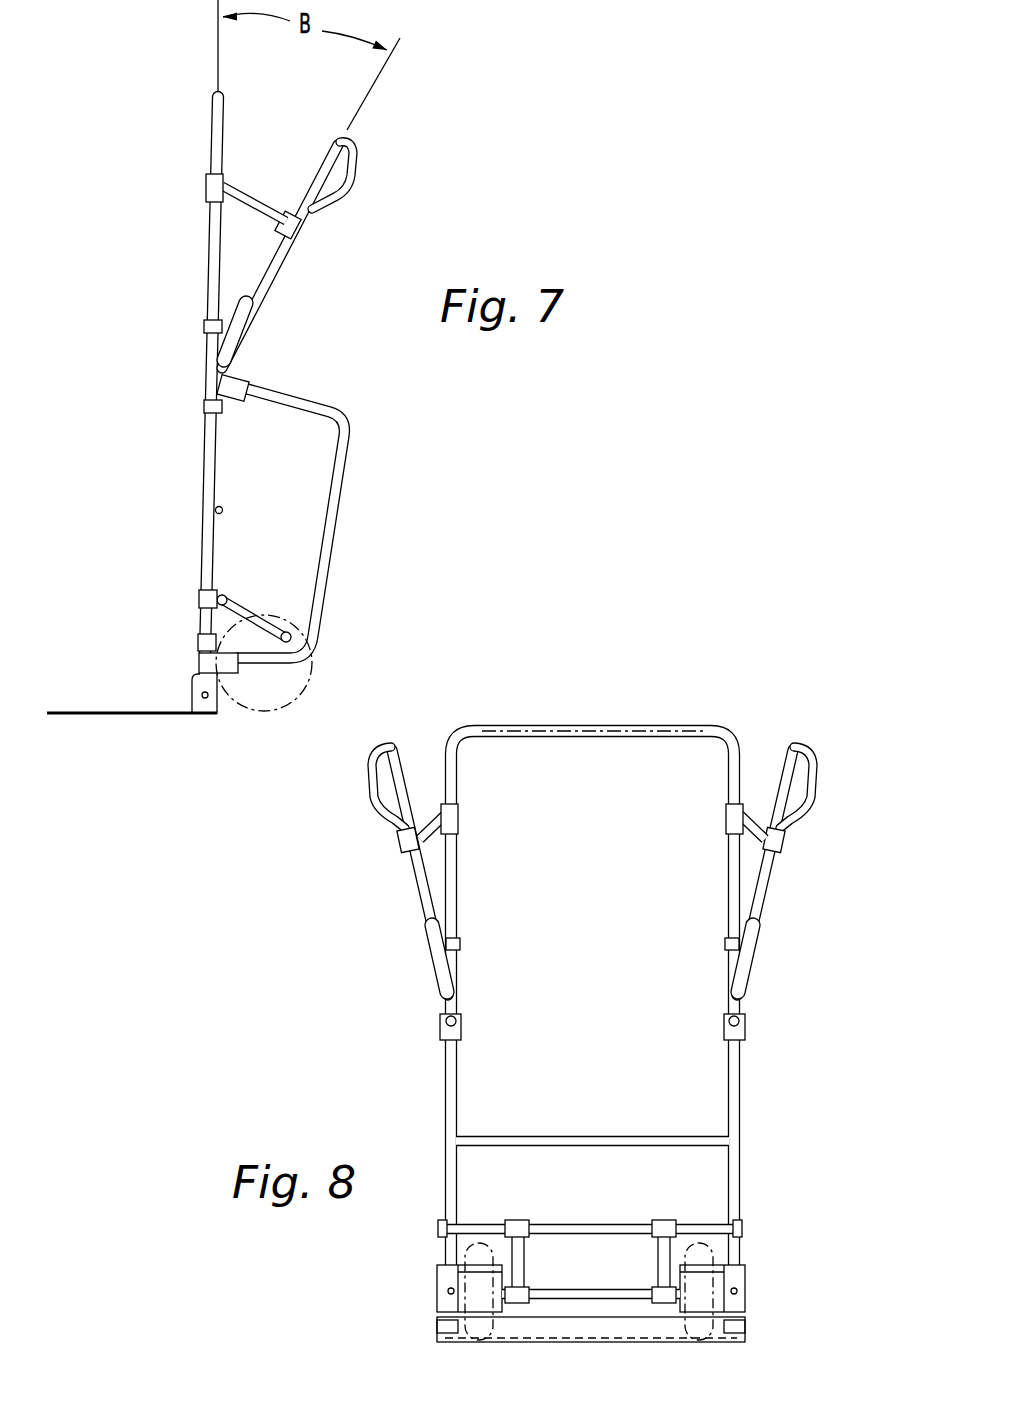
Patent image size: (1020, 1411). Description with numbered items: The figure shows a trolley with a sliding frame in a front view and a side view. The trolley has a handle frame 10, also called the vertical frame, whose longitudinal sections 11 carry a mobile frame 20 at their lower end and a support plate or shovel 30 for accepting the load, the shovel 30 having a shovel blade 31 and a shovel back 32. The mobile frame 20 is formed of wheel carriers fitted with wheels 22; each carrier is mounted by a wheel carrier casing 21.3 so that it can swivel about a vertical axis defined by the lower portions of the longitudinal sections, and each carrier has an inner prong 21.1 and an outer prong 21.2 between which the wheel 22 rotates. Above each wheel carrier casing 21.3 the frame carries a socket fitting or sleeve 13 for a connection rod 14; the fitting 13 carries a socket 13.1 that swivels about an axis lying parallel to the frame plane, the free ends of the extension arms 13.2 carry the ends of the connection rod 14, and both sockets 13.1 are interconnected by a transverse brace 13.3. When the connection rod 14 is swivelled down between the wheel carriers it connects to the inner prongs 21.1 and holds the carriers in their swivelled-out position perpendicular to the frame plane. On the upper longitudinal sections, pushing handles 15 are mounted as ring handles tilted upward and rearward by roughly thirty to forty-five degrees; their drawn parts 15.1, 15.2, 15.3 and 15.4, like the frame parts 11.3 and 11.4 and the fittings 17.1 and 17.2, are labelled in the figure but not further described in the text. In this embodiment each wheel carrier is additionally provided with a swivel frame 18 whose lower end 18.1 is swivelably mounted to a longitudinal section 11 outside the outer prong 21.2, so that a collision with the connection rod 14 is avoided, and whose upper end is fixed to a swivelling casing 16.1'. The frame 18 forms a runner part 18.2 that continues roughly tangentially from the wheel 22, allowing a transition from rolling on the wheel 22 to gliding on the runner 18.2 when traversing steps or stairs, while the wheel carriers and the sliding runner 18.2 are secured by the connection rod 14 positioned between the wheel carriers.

In FIG. 7, the handle frame 10 is at (208, 258).
In FIG. 7, the longitudinal section 11 is at (225, 121).
In FIG. 8, the longitudinal section 11 is at (457, 878).
In FIG. 8, the cross bar 11.3 is at (642, 1140).
In FIG. 7, the upper cross member 11.4 is at (214, 93).
In FIG. 8, the upper cross member 11.4 is at (585, 727).
In FIG. 7, the socket fitting 13 is at (199, 597).
In FIG. 8, the socket 13.1 is at (440, 1229).
In FIG. 7, the extension arm 13.2 is at (263, 609).
In FIG. 8, the extension arm 13.2 is at (502, 1235).
In FIG. 8, the transverse brace 13.3 is at (550, 1224).
In FIG. 7, the connection rod 14 is at (300, 650).
In FIG. 8, the connection rod 14 is at (585, 1290).
In FIG. 7, the pushing handle 15 is at (318, 233).
In FIG. 8, the pushing handle 15 is at (586, 823).
In FIG. 7, the grip 15.1 is at (333, 150).
In FIG. 8, the grip 15.1 is at (390, 785).
In FIG. 7, the collar 15.2 is at (352, 172).
In FIG. 8, the collar 15.2 is at (384, 815).
In FIG. 7, the strut 15.3 is at (255, 200).
In FIG. 8, the strut 15.3 is at (425, 810).
In FIG. 7, the clamp 15.4 is at (206, 185).
In FIG. 8, the clamp 15.4 is at (458, 814).
In FIG. 7, the swivelling casing 16.1' is at (190, 334).
In FIG. 8, the swivelling casing 16.1' is at (592, 958).
In FIG. 7, the clamp 17.1 is at (204, 326).
In FIG. 8, the clamp 17.1 is at (460, 942).
In FIG. 7, the joint 17.2 is at (204, 406).
In FIG. 8, the joint 17.2 is at (460, 1037).
In FIG. 7, the swivel frame 18 is at (317, 508).
In FIG. 7, the lower end of swivel frame 18.1 is at (262, 668).
In FIG. 8, the lower end of swivel frame 18.1 is at (440, 1296).
In FIG. 7, the runner part 18.2 is at (333, 527).
In FIG. 8, the runner part 18.2 is at (445, 1106).
In FIG. 7, the mobile frame 20 is at (196, 633).
In FIG. 8, the inner prong 21.1 is at (678, 1310).
In FIG. 7, the outer prong 21.2 is at (237, 680).
In FIG. 8, the outer prong 21.2 is at (745, 1315).
In FIG. 7, the wheel carrier casing 21.3 is at (199, 656).
In FIG. 7, the wheel 22 is at (300, 690).
In FIG. 8, the wheel 22 is at (465, 1258).
In FIG. 7, the shovel 30 is at (128, 710).
In FIG. 7, the shovel blade 31 is at (75, 710).
In FIG. 8, the shovel back 32 is at (548, 1338).